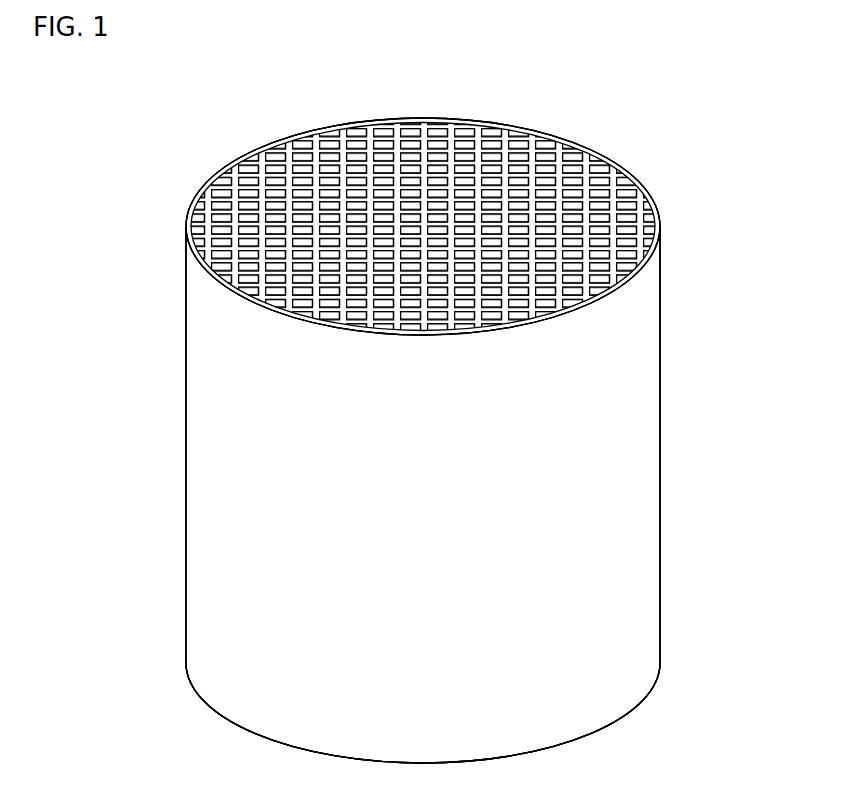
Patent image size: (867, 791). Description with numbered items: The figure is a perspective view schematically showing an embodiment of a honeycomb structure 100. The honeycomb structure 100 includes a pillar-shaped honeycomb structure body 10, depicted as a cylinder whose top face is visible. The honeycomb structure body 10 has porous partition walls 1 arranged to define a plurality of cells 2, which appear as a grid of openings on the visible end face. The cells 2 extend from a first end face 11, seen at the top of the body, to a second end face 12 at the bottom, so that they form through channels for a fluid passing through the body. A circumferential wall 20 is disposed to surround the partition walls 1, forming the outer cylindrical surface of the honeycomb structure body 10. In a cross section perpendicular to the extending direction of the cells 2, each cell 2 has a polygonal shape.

The honeycomb structure 100 is at (708, 94).
The honeycomb structure body 10 is at (628, 343).
The first end face 11 is at (292, 141).
The second end face 12 is at (563, 743).
The partition walls 1 is at (399, 152).
The cells 2 is at (492, 144).
The circumferential wall 20 is at (608, 492).